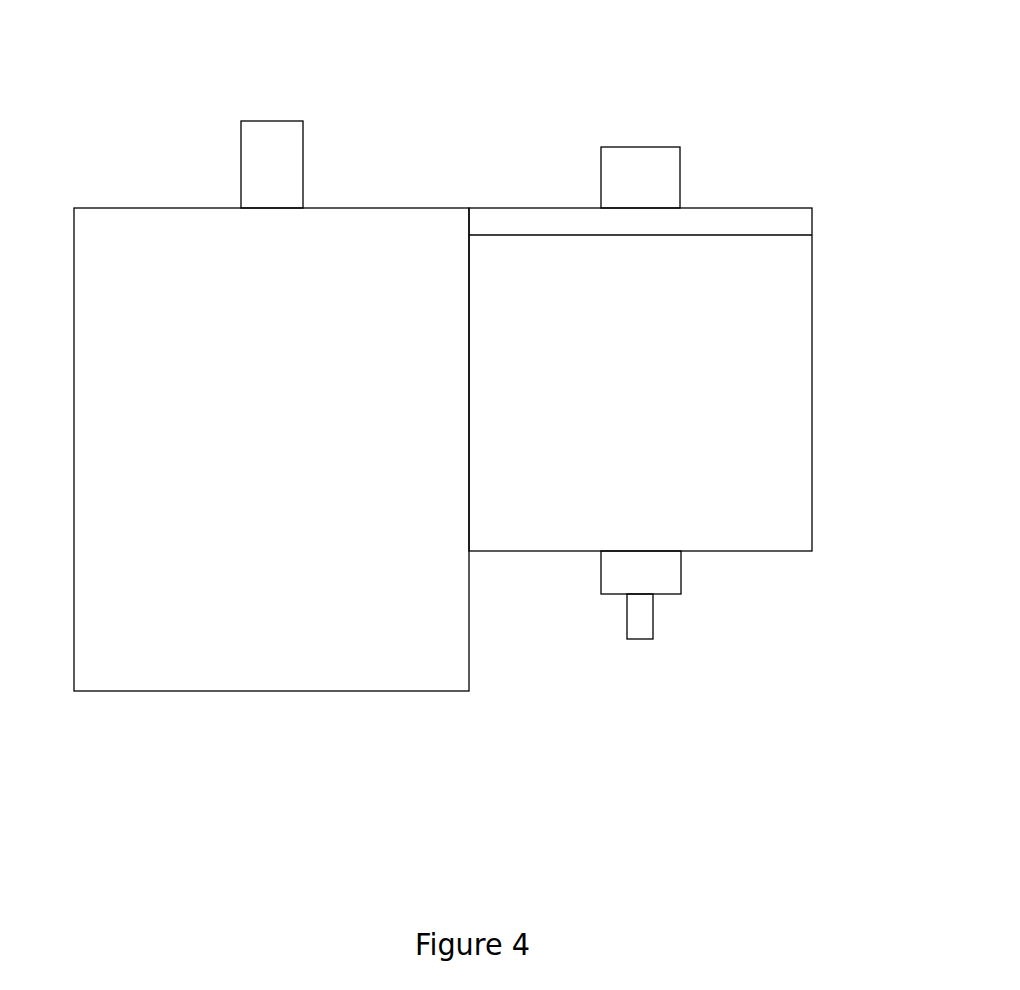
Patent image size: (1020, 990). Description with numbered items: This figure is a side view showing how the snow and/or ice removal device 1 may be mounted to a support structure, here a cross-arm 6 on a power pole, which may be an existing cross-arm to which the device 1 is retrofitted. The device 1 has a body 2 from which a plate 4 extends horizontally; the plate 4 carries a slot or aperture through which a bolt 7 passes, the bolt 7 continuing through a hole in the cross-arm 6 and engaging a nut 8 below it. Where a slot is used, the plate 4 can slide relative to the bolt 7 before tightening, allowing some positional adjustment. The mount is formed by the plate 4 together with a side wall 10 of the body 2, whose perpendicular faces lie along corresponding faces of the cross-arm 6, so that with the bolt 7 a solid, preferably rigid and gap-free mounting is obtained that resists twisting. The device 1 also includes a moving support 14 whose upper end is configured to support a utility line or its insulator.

The snow and/or ice removal device 1 is at (154, 155).
The body 2 is at (160, 462).
The plate 4 is at (794, 225).
The cross-arm 6 is at (748, 518).
The bolt 7 is at (652, 173).
The nut 8 is at (658, 574).
The side wall 10 is at (469, 362).
The moving support 14 is at (277, 167).